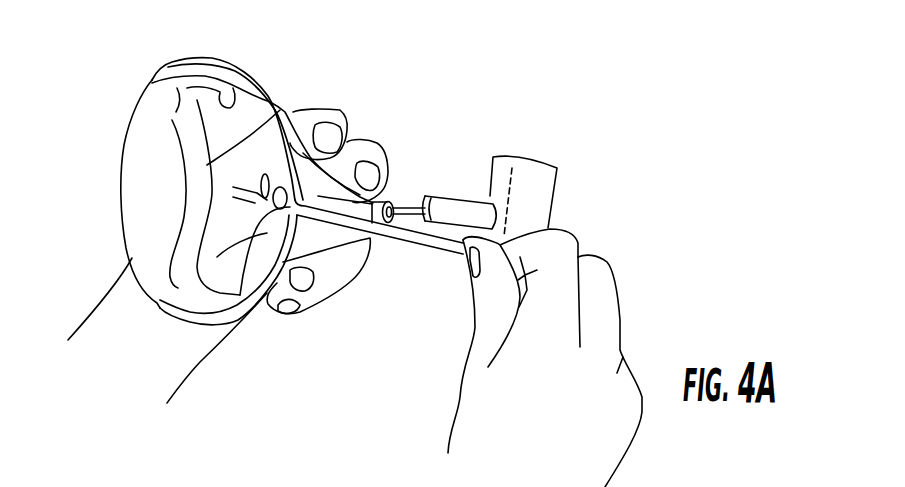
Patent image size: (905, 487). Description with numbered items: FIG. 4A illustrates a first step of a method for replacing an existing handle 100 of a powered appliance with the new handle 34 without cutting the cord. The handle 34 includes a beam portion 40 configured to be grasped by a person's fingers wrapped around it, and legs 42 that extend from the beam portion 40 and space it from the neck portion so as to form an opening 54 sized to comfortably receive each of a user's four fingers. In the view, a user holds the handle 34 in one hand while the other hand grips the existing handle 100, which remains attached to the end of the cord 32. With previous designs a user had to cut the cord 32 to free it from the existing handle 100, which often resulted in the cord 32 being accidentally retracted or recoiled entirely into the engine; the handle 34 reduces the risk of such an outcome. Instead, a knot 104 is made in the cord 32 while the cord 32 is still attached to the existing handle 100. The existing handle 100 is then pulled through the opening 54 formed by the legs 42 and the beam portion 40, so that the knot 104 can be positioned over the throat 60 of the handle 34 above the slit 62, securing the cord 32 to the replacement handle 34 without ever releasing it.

The handle 34 is at (167, 50).
The opening 54 is at (232, 102).
The legs 42 is at (283, 108).
The slit 62 is at (303, 193).
The throat 60 is at (360, 198).
The cord 32 is at (397, 238).
The existing handle 100 is at (535, 170).
The beam portion 40 is at (138, 238).
The knot 104 is at (262, 302).